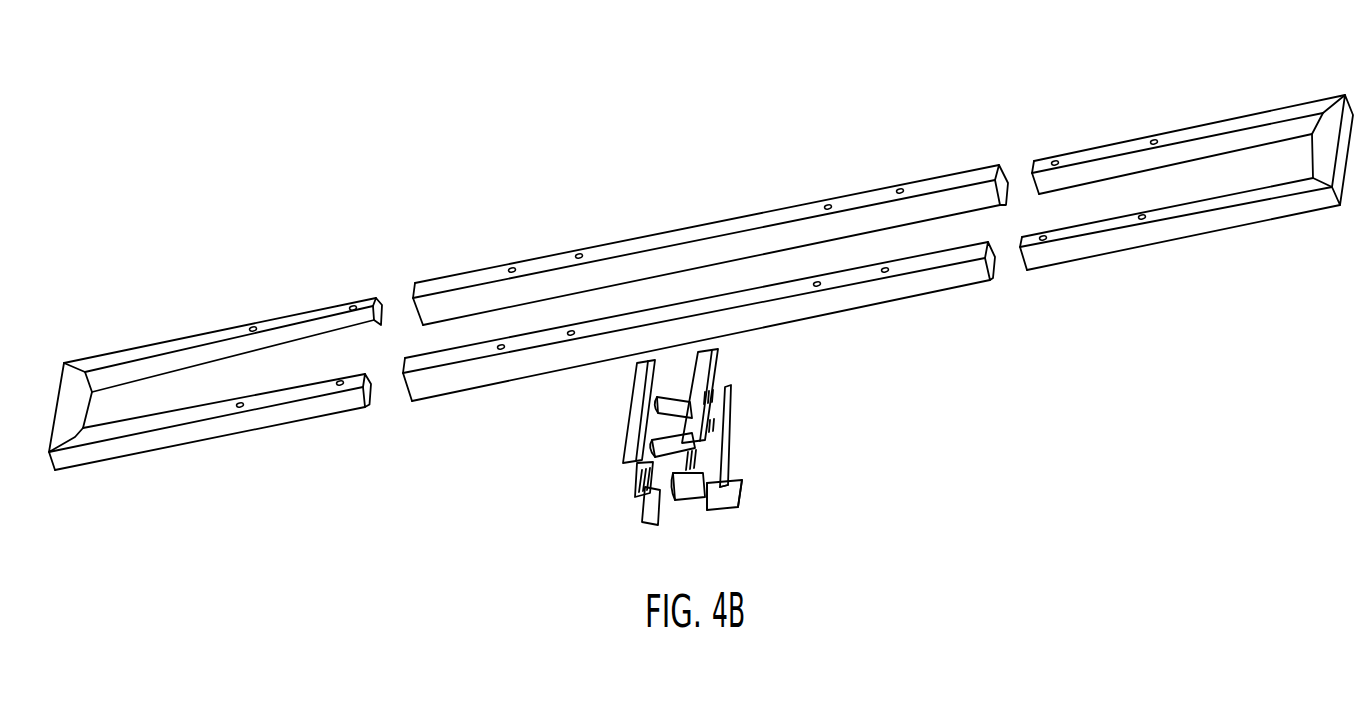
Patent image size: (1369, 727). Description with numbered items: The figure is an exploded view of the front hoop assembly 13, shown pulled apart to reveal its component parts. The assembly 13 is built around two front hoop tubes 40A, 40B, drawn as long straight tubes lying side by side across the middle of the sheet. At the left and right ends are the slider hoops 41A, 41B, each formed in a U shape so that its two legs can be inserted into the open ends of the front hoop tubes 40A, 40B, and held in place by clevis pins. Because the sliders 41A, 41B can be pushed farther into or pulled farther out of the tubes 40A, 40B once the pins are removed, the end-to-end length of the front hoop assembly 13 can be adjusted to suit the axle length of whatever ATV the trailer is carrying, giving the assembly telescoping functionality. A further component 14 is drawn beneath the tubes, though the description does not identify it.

The front hoop assembly 13 is at (358, 123).
The connector assembly 14 is at (640, 422).
The front hoop tube 40A is at (828, 302).
The front hoop tube 40B is at (675, 240).
The slider hoop 41A is at (185, 342).
The slider hoop 41B is at (1265, 115).